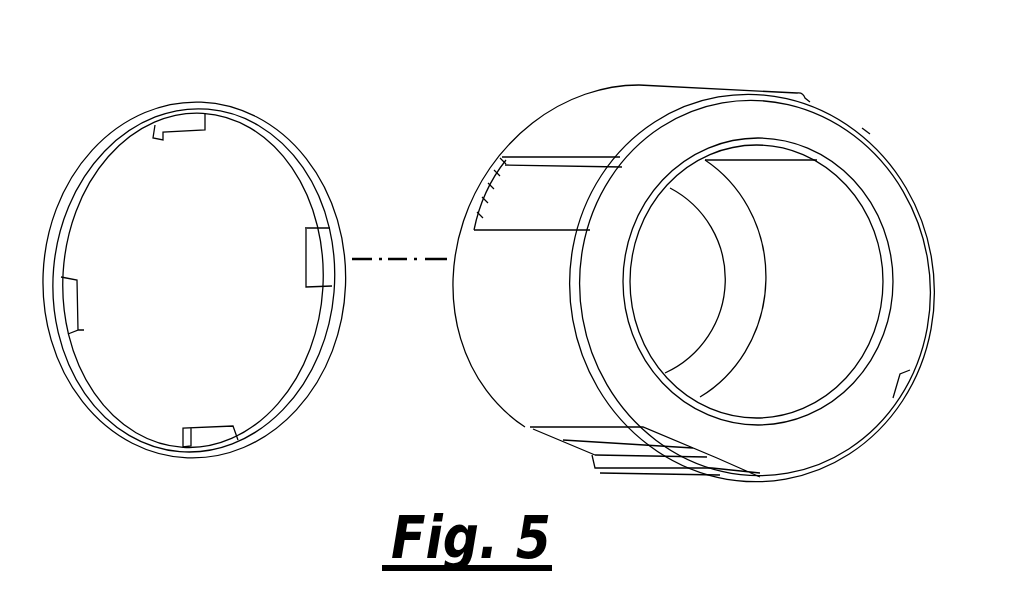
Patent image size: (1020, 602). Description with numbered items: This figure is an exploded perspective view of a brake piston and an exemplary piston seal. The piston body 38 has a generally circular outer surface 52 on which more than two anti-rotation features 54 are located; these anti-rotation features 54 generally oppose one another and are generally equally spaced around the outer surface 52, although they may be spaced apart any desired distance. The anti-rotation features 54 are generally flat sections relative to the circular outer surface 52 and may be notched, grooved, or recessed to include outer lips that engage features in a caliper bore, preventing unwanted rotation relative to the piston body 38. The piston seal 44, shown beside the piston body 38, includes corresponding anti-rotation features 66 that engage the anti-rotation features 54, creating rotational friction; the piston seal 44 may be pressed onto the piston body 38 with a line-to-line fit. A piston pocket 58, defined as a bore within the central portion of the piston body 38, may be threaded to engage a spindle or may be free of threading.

The piston body 38 is at (696, 270).
The piston seal 44 is at (194, 262).
The outer surface 52 is at (492, 318).
The anti-rotation features 54 is at (520, 187).
The piston pocket 58 is at (810, 215).
The anti-rotation features 66 is at (180, 133).